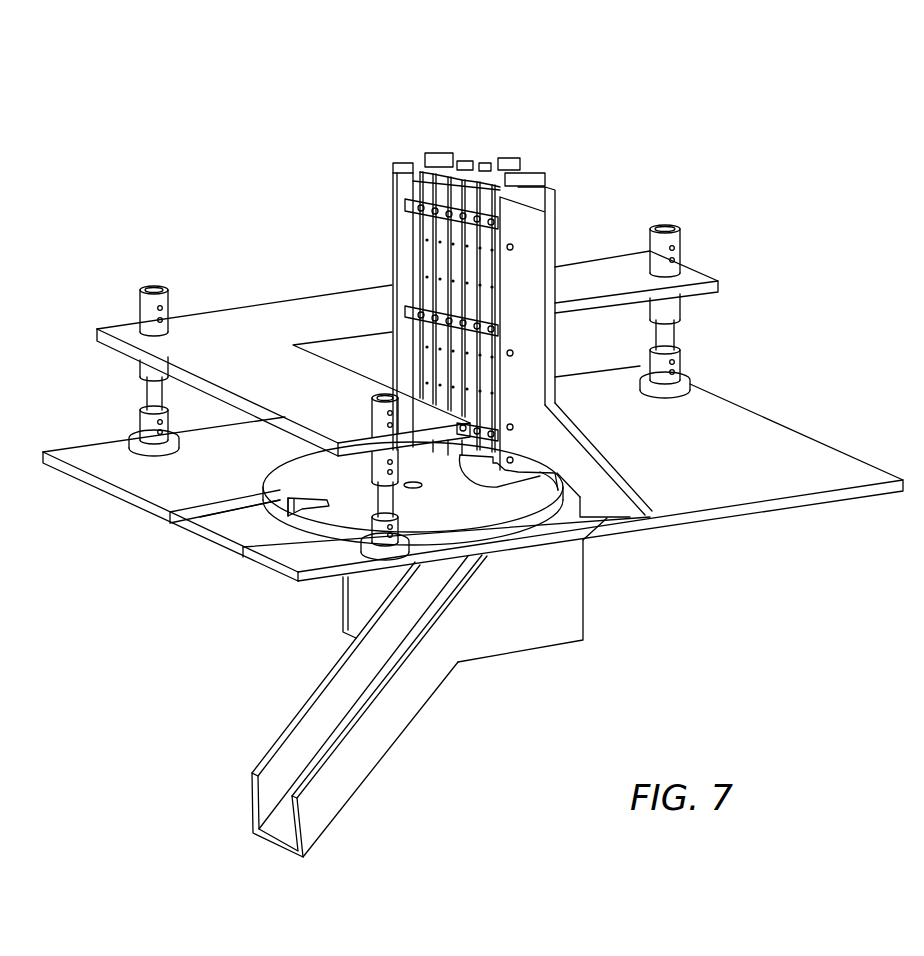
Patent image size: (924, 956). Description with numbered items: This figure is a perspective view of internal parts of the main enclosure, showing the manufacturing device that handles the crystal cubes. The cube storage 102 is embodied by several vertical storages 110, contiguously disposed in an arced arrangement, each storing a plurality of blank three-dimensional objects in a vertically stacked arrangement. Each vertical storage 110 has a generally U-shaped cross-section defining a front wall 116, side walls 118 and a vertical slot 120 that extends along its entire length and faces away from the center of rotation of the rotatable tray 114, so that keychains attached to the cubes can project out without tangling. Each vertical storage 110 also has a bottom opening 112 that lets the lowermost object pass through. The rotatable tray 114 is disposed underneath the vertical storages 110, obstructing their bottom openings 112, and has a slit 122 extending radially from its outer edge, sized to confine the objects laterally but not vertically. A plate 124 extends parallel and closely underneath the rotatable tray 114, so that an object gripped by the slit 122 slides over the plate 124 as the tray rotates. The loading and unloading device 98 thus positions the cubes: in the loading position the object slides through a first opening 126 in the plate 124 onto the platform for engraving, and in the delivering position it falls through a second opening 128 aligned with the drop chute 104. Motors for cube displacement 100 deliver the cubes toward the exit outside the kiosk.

The loading and unloading device 98 is at (190, 595).
The motors for cube displacement 100 is at (579, 631).
The cube storage 102 is at (404, 120).
The drop chute 104 is at (333, 817).
The vertical storage 110 is at (438, 155).
The bottom opening 112 is at (465, 458).
The rotatable tray 114 is at (458, 512).
The front wall 116 is at (497, 192).
The side walls 118 is at (459, 162).
The vertical slot 120 is at (481, 164).
The slit 122 is at (292, 508).
The plate 124 is at (207, 490).
The first opening 126 is at (243, 523).
The second opening 128 is at (556, 558).